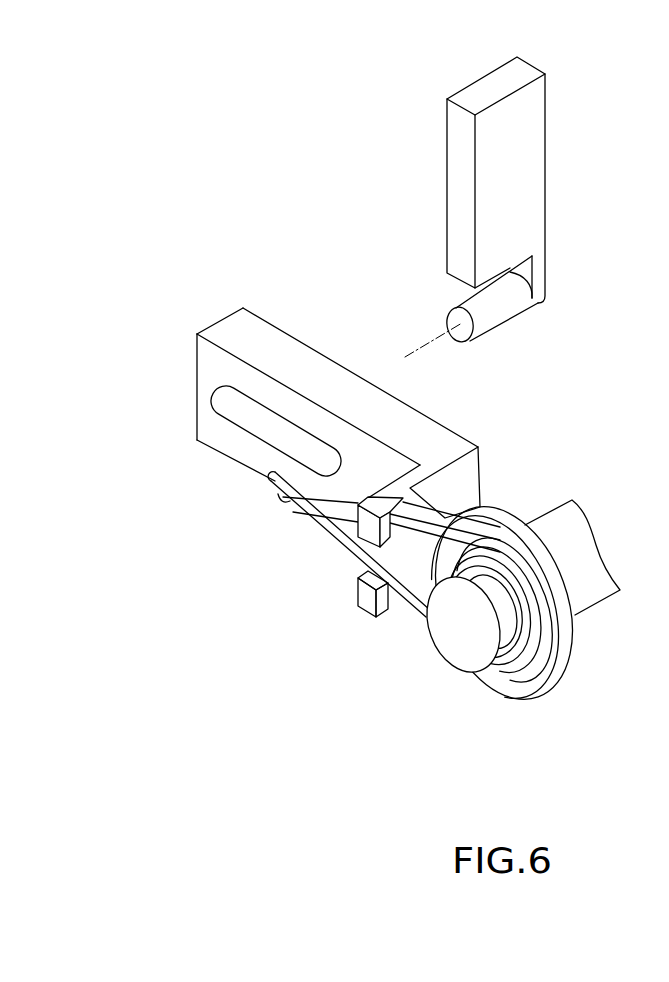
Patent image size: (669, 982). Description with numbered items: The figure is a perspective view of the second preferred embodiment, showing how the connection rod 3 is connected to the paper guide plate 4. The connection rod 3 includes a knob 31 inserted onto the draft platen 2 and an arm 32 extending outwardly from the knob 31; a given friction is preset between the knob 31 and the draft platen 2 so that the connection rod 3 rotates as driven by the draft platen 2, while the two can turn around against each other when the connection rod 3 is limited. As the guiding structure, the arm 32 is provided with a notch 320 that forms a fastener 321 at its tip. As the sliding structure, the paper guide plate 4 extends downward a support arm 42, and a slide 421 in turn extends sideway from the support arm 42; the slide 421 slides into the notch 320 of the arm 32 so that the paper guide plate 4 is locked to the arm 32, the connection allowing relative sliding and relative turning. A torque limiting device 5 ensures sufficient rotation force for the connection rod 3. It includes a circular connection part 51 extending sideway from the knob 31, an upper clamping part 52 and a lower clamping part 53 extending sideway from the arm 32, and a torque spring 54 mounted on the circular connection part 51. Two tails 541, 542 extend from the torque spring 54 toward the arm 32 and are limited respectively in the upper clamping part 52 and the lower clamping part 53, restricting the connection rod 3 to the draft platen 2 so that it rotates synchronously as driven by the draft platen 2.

The draft platen 2 is at (457, 640).
The connection rod 3 is at (355, 461).
The knob 31 is at (568, 635).
The arm 32 is at (285, 415).
The notch 320 is at (253, 428).
The fastener 321 is at (227, 359).
The paper guide plate 4 is at (478, 209).
The support arm 42 is at (540, 272).
The slide 421 is at (511, 308).
The torque limiting device 5 is at (410, 582).
The circular connection part 51 is at (503, 672).
The upper clamping part 52 is at (367, 518).
The lower clamping part 53 is at (368, 600).
The torque spring 54 is at (410, 591).
The tail 541 is at (263, 485).
The tail 542 is at (284, 500).